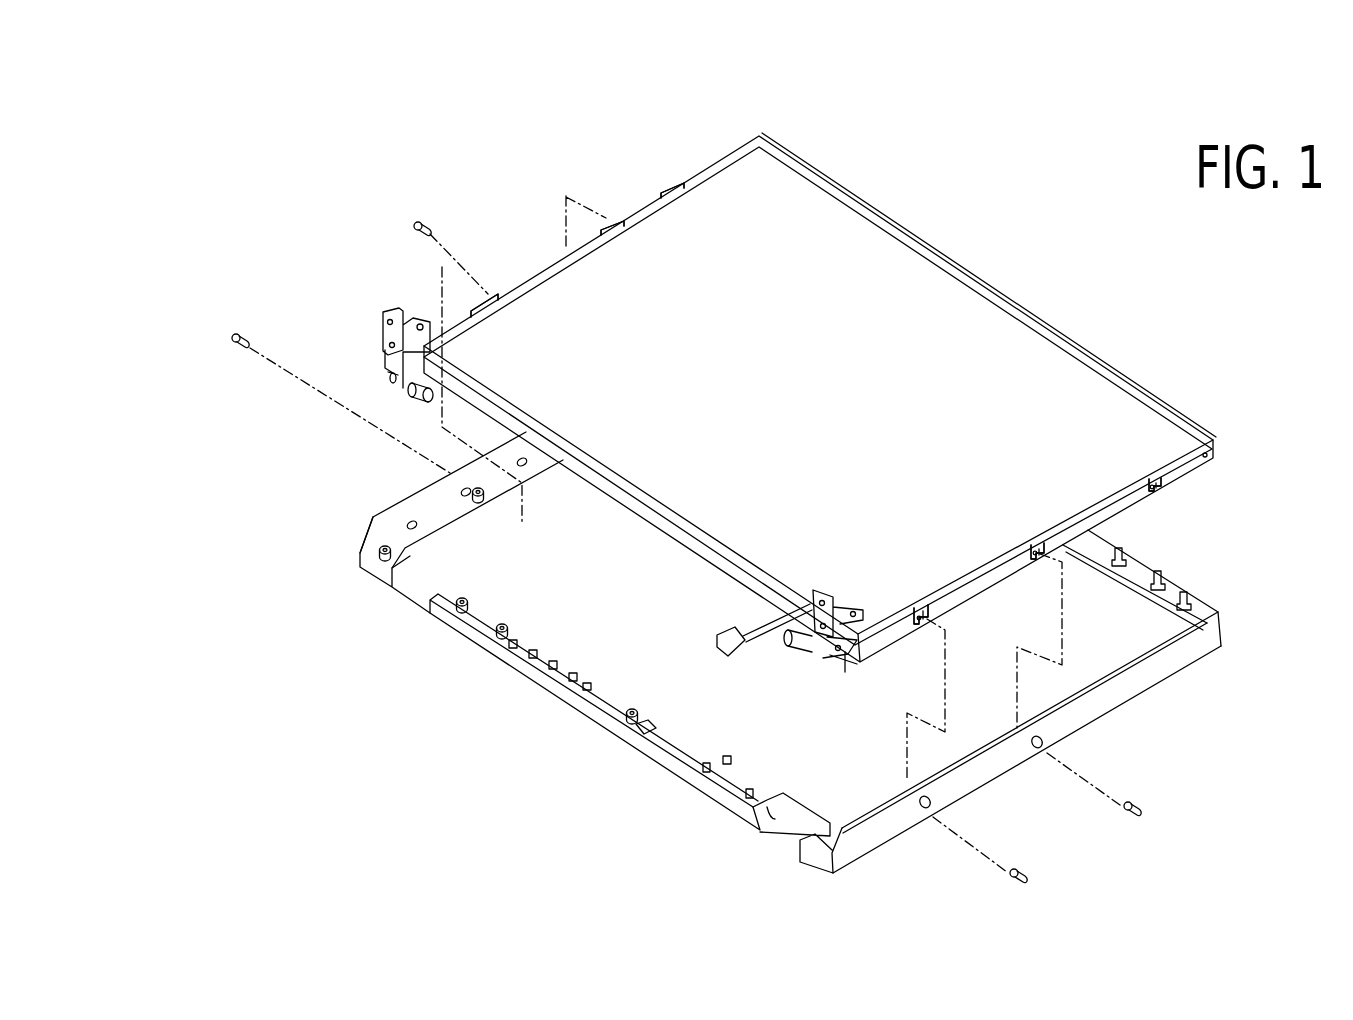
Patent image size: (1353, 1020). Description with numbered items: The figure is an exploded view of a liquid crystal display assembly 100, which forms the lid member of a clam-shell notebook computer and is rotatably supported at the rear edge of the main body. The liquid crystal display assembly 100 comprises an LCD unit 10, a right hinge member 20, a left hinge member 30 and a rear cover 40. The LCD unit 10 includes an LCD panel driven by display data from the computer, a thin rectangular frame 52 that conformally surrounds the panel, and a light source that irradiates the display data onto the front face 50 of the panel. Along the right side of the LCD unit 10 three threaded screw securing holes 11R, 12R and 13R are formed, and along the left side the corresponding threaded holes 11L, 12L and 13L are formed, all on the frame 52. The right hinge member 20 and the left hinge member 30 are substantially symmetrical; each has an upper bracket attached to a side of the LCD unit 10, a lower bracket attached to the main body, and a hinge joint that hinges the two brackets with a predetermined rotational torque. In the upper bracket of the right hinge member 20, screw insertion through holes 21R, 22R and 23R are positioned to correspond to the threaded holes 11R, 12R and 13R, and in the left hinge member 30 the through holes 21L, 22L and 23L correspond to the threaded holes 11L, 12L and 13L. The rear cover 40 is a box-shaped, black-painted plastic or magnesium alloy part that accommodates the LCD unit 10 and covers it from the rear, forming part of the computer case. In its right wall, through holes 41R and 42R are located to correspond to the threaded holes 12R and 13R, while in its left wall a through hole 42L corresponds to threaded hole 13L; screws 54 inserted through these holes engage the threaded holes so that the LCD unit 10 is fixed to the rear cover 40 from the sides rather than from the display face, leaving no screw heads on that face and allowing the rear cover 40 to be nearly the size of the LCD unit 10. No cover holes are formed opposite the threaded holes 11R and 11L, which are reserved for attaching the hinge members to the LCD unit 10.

The LCD unit 10 is at (870, 366).
The threaded hole 11L is at (677, 182).
The threaded hole 12L is at (608, 222).
The threaded hole 13L is at (488, 296).
The threaded hole 11R is at (1156, 490).
The threaded hole 12R is at (1036, 550).
The threaded hole 13R is at (919, 614).
The through hole 21L is at (672, 190).
The through hole 22L is at (612, 228).
The through hole 23L is at (484, 305).
The through hole 21R is at (1155, 484).
The through hole 22R is at (1037, 551).
The through hole 23R is at (921, 614).
The right hinge member 20 is at (870, 361).
The left hinge member 30 is at (368, 302).
The rear cover 40 is at (778, 674).
The through hole 41R is at (1035, 750).
The through hole 42L is at (418, 480).
The through hole 42R is at (922, 806).
The front face 50 is at (823, 263).
The frame 52 is at (1122, 377).
The screw 54 is at (415, 222).
The liquid crystal display assembly 100 is at (778, 674).